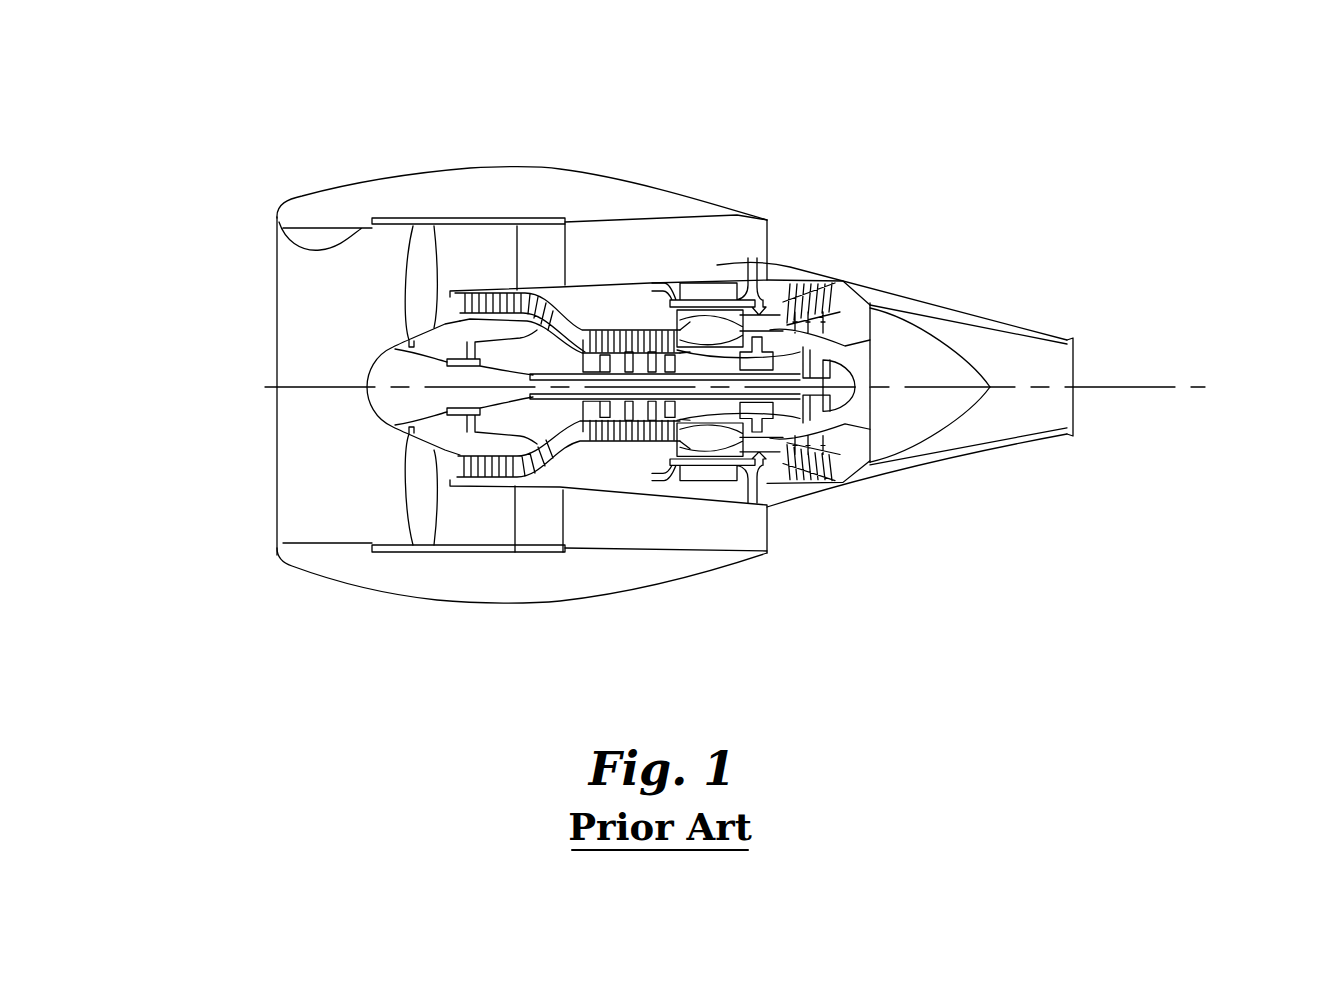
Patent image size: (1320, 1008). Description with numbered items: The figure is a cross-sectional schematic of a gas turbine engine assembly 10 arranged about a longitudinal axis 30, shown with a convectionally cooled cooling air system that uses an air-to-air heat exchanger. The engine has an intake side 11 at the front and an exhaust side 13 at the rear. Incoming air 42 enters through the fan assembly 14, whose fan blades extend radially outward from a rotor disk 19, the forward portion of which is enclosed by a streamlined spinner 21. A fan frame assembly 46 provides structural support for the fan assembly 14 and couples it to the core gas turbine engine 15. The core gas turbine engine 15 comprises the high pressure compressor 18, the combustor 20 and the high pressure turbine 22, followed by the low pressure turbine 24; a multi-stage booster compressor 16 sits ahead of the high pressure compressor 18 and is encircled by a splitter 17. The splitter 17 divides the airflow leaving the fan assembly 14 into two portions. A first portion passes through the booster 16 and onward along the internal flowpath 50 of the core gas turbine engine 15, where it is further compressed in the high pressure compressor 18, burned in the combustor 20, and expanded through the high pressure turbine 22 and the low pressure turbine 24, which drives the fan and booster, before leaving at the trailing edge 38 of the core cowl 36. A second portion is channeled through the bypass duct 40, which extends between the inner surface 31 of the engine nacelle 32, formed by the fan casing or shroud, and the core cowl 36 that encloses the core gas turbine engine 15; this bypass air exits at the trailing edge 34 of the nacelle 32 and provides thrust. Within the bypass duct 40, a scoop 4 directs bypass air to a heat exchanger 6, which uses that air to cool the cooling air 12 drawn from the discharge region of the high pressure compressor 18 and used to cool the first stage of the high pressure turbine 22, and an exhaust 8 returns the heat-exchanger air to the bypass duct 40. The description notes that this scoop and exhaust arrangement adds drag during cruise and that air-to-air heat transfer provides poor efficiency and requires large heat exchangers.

The gas turbine engine assembly 10 is at (209, 146).
The intake side 11 is at (312, 513).
The incoming air 42 is at (317, 270).
The inner surface 31 is at (290, 228).
The bypass duct 40 is at (620, 237).
The engine nacelle 32 is at (330, 586).
The fan frame assembly 46 is at (550, 247).
The fan assembly 14 is at (405, 279).
The spinner 21 is at (372, 401).
The rotor disk 19 is at (403, 427).
The scoop 4 is at (653, 270).
The booster compressor 16 is at (488, 485).
The splitter 17 is at (545, 478).
The high pressure compressor 18 is at (628, 456).
The exhaust 8 is at (770, 240).
The heat exchanger 6 is at (707, 285).
The combustor 20 is at (723, 452).
The high pressure turbine 22 is at (755, 458).
The cooling air 12 is at (795, 282).
The low pressure turbine 24 is at (807, 488).
The internal flowpath 50 is at (837, 386).
The trailing edge of the nacelle 34 is at (772, 223).
The core gas turbine engine 15 is at (897, 509).
The core cowl 36 is at (963, 460).
The trailing edge of the core cowl 38 is at (1075, 362).
The exhaust side 13 is at (1096, 436).
The longitudinal axis 30 is at (1173, 386).